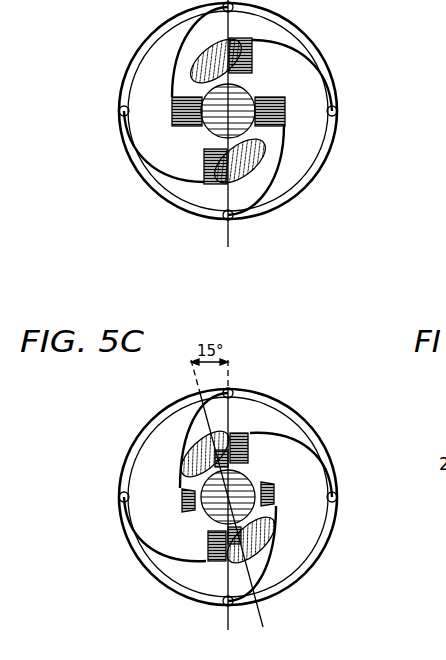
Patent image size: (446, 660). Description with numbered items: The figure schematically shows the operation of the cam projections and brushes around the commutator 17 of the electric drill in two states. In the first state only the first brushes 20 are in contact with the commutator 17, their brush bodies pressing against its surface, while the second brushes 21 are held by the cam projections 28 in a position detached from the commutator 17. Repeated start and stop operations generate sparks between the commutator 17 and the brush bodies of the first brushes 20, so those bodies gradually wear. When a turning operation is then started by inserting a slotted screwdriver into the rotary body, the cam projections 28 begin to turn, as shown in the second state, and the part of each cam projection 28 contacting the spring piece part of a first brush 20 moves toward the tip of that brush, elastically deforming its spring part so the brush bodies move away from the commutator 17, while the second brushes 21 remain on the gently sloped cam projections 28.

In FIG. 5A, the commutator 17 is at (212, 130).
In FIG. 5C, the commutator 17 is at (218, 518).
In FIG. 5A, the first brush 20 is at (170, 106).
In FIG. 5C, the first brush 20 is at (178, 497).
In FIG. 5A, the second brush 21 is at (214, 188).
In FIG. 5C, the second brush 21 is at (244, 426).
In FIG. 5A, the cam projection 28 is at (205, 43).
In FIG. 5C, the cam projection 28 is at (188, 435).